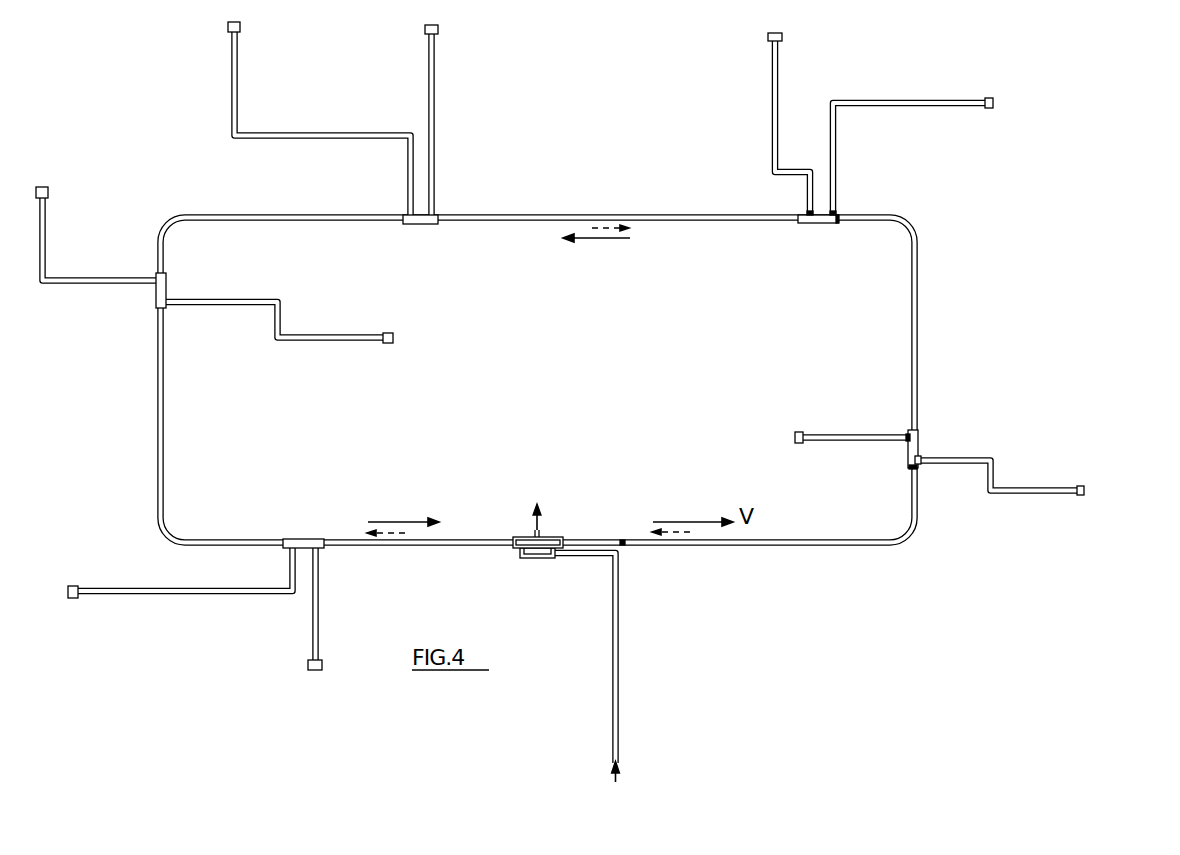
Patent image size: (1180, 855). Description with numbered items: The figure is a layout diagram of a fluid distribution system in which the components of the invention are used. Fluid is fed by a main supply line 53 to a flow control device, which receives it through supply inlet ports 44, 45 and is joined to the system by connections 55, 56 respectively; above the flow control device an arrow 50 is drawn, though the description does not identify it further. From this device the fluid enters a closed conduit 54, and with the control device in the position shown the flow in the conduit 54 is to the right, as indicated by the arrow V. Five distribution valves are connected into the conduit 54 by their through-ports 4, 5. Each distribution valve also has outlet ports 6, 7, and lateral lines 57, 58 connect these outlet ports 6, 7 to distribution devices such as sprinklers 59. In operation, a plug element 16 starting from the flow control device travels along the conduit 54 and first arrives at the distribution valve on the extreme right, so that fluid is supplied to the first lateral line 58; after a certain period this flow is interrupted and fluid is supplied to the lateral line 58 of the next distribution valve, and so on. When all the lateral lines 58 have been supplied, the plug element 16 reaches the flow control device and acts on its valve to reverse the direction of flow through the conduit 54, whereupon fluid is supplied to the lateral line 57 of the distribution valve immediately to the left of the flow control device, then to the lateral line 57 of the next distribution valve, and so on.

The through-port 4 is at (800, 214).
The through-port 5 is at (838, 214).
The outlet port 6 is at (812, 211).
The outlet port 7 is at (834, 211).
The plug element 16 is at (624, 547).
The supply inlet port 44 is at (520, 557).
The supply inlet port 45 is at (555, 557).
The vent outlet 50 is at (540, 512).
The main supply line 53 is at (619, 640).
The conduit 54 is at (918, 298).
The connection 55 is at (514, 536).
The connection 56 is at (563, 536).
The lateral line 57 is at (772, 128).
The lateral line 58 is at (878, 105).
The sprinkler 59 is at (993, 107).